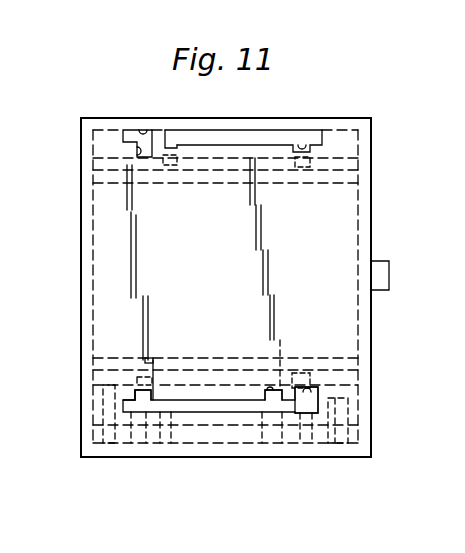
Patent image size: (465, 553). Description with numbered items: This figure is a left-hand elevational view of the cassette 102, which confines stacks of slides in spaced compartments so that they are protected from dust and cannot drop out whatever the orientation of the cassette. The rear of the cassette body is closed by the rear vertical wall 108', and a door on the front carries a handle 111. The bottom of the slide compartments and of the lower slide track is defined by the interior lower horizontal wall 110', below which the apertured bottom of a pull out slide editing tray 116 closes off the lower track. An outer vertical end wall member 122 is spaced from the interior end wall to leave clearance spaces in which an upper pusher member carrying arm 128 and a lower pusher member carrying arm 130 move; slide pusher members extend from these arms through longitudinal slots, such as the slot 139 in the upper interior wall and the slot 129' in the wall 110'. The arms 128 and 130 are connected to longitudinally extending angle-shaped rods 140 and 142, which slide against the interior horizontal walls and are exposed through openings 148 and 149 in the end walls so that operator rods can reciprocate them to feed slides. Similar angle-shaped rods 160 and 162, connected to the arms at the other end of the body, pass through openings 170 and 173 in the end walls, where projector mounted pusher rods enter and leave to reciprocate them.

The cassette 102 is at (136, 98).
The rear vertical wall 108' is at (55, 287).
The interior lower horizontal wall 110' is at (225, 348).
The handle 111 is at (385, 276).
The pull out slide editing tray 116 is at (372, 398).
The outer vertical end wall member 122 is at (340, 220).
The upper pusher member carrying arm 128 is at (266, 138).
The longitudinal slot 129' is at (163, 438).
The lower pusher member carrying arm 130 is at (188, 403).
The longitudinal slot 139 is at (257, 408).
The angle-shaped rod 140 is at (303, 138).
The angle-shaped rod 142 is at (123, 400).
The opening in end wall 148 is at (221, 130).
The opening in end wall 149 is at (226, 405).
The angle-shaped rod 160 is at (145, 130).
The angle-shaped rod 162 is at (312, 405).
The opening in end wall 170 is at (140, 156).
The opening in end wall 173 is at (303, 392).